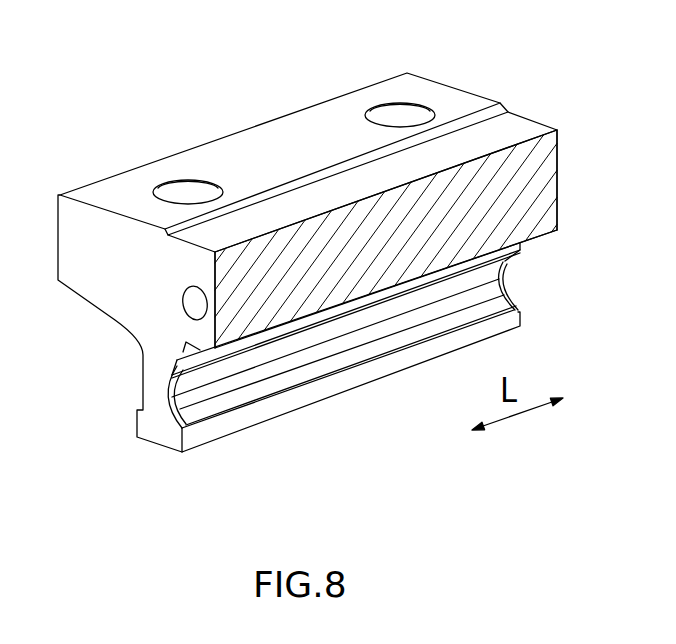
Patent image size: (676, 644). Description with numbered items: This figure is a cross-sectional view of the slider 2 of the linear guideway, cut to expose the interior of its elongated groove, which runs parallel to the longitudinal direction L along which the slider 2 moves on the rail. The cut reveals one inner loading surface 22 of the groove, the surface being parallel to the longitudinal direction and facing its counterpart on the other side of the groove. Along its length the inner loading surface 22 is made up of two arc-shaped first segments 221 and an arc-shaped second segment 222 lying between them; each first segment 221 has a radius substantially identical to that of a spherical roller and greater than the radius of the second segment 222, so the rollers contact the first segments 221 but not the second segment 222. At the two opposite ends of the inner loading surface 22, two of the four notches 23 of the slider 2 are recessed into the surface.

The slider 2 is at (289, 114).
The inner loading surface 22 is at (428, 449).
The first segment 221 is at (350, 318).
The second segment 222 is at (390, 318).
The notch 23 is at (168, 420).